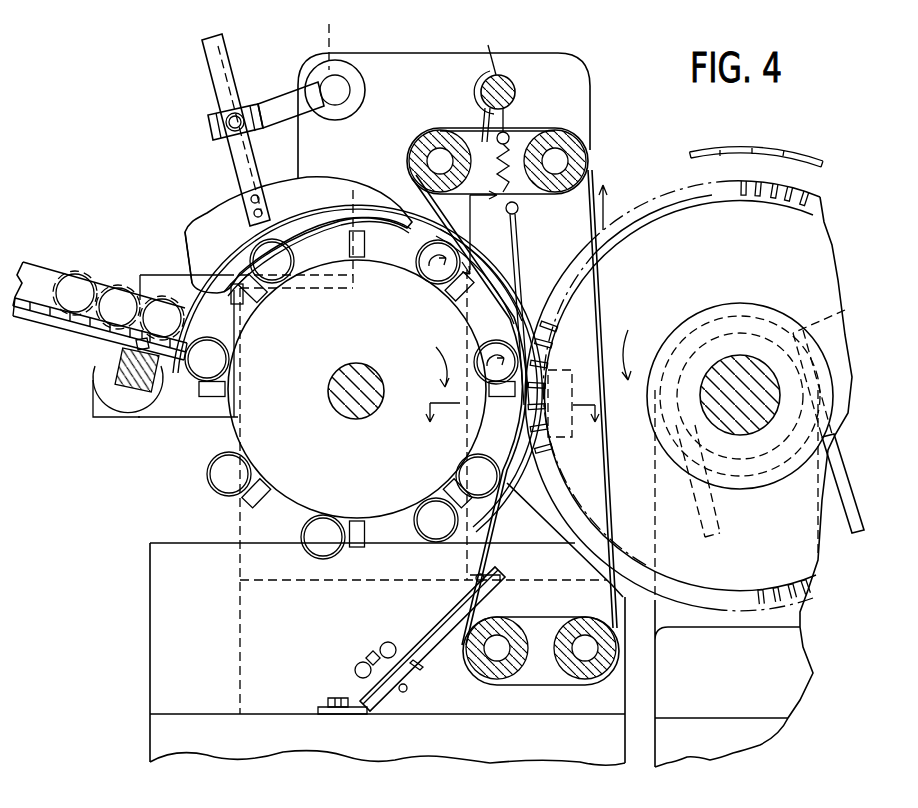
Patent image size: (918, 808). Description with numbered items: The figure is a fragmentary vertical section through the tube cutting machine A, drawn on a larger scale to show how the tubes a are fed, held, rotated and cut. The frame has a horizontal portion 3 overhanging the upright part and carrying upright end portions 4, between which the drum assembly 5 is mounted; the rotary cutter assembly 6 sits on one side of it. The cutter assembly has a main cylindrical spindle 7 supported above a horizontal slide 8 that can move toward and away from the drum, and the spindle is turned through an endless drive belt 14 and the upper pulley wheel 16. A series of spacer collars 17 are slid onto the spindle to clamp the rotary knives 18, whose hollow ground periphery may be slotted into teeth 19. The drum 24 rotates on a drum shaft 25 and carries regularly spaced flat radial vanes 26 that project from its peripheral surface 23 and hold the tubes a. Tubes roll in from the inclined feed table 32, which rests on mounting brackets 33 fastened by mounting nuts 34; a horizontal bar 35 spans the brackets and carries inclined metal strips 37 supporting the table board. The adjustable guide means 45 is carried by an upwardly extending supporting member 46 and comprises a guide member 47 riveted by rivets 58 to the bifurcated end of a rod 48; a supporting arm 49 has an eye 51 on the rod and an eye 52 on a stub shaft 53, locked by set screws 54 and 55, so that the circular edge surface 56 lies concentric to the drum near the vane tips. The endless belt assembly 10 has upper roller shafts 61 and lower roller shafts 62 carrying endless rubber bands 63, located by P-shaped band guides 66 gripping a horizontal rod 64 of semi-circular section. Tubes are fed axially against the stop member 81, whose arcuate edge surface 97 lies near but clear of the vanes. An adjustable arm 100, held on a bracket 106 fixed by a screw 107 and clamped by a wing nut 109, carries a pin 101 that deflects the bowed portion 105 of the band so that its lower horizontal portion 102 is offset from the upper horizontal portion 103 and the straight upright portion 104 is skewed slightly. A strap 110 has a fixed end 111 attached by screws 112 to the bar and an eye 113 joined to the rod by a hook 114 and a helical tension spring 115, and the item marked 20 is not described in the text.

The tube cutting machine A is at (561, 42).
The tubes a is at (118, 285).
The horizontal frame portion 3 is at (447, 745).
The upright end portions 4 is at (238, 538).
The drum assembly 5 is at (218, 445).
The rotary cutter assembly 6 is at (835, 226).
The main cylindrical spindle 7 is at (742, 355).
The horizontal slide 8 is at (733, 712).
The endless belt assembly 10 is at (591, 128).
The endless drive belt 14 is at (851, 508).
The upper pulley wheel 16 is at (845, 310).
The spacer collars 17 is at (757, 489).
The rotary knives 18 is at (822, 275).
The teeth 19 is at (806, 593).
The rim band 20 is at (750, 149).
The peripheral surface of the drum 23 is at (226, 402).
The drum 24 is at (376, 505).
The drum shaft 25 is at (357, 370).
The radial vanes 26 is at (262, 303).
The inclined feed table 32 is at (56, 346).
The mounting brackets 33 is at (140, 420).
The mounting nuts 34 is at (318, 255).
The horizontal bar 35 is at (116, 380).
The metal strips 37 is at (92, 335).
The adjustable guide means 45 is at (201, 198).
The supporting member 46 is at (428, 53).
The guide member 47 is at (195, 235).
The rod 48 is at (228, 60).
The supporting arm 49 is at (290, 100).
The eye 51 is at (210, 130).
The eye 52 is at (348, 113).
The stub shaft 53 is at (328, 86).
The set screw 54 is at (331, 32).
The set screw 55 is at (228, 117).
The circular edge surface 56 is at (232, 294).
The rivets 58 is at (251, 198).
The upper roller shafts 61 is at (430, 140).
The roller shafts 62 is at (486, 674).
The endless rubber bands 63 is at (606, 492).
The horizontal rod 64 is at (512, 92).
The band guides 66 is at (482, 125).
The stop member 81 is at (517, 250).
The arcuate edge surface 97 is at (465, 322).
The adjustable arm 100 is at (441, 636).
The pin 101 is at (477, 578).
The lower horizontal portion of the band 102 is at (545, 686).
The upper horizontal portion of the band 103 is at (530, 128).
The straight upright portion of the band 104 is at (612, 284).
The bowed portion of the band 105 is at (498, 545).
The bracket 106 is at (383, 708).
The screw 107 is at (326, 700).
The wing nut 109 is at (383, 644).
The strap 110 is at (288, 560).
The fixed end of strap 111 is at (120, 350).
The screws 112 is at (133, 392).
The eye 113 is at (518, 212).
The hook 114 is at (490, 45).
The helical tension spring 115 is at (512, 192).